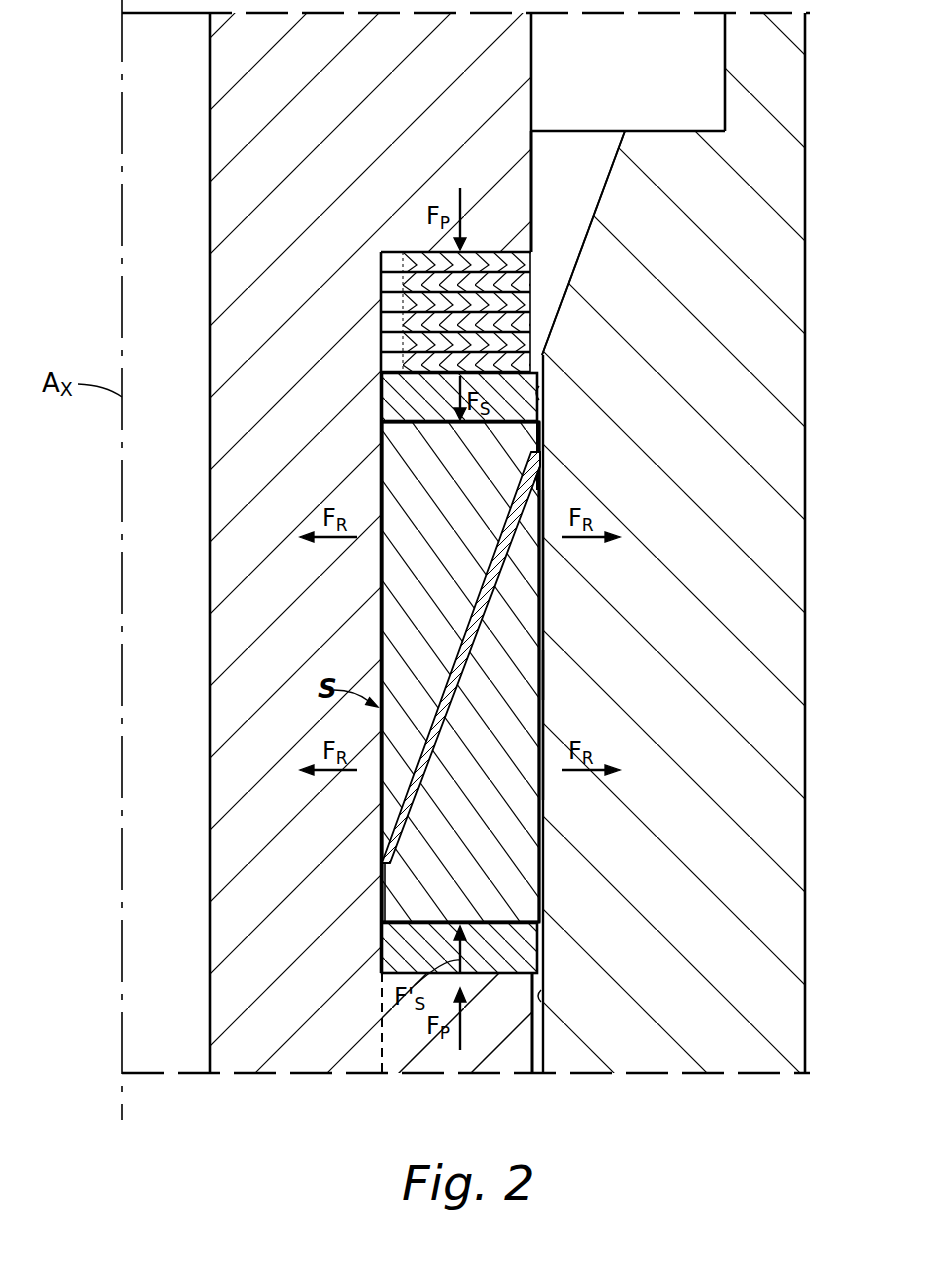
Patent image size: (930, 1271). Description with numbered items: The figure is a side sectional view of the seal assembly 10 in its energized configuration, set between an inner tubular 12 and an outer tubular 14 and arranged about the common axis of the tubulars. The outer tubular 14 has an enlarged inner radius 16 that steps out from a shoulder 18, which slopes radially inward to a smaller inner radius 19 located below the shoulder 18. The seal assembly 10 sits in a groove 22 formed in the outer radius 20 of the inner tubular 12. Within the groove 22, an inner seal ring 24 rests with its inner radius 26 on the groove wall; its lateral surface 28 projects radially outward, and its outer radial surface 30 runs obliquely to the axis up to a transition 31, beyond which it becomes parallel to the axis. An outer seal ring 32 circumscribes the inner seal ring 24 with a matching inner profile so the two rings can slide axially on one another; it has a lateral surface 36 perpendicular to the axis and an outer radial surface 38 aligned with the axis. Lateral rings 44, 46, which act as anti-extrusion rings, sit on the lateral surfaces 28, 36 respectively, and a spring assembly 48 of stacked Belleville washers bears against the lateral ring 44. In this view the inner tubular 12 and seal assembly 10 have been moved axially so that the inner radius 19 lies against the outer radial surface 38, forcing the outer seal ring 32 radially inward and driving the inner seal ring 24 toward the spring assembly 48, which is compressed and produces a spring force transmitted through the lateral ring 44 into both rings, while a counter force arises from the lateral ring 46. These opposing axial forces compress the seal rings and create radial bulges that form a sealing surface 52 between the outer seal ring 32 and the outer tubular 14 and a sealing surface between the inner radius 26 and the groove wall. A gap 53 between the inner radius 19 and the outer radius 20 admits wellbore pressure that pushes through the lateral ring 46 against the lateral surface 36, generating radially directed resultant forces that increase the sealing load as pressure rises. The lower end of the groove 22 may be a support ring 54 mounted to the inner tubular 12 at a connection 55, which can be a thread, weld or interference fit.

The seal assembly 10 is at (366, 487).
The inner tubular 12 is at (515, 66).
The outer tubular 14 is at (805, 485).
The inner radius 16 is at (725, 31).
The shoulder 18 is at (668, 130).
The inner radius 19 is at (543, 393).
The outer radius 20 is at (533, 95).
The groove 22 is at (546, 257).
The inner seal ring 24 is at (392, 584).
The inner radius 26 is at (383, 628).
The lateral surface 28 is at (383, 424).
The outer radial surface 30 is at (425, 745).
The transition 31 is at (544, 463).
The outer seal ring 32 is at (530, 643).
The lateral surface 36 is at (540, 938).
The outer radial surface 38 is at (546, 606).
The lateral ring 44 is at (390, 379).
The lateral ring 46 is at (388, 952).
The spring assembly 48 is at (533, 299).
The sealing surface 52 is at (551, 691).
The gap 53 is at (545, 1021).
The support ring 54 is at (515, 1053).
The connection 55 is at (366, 1007).